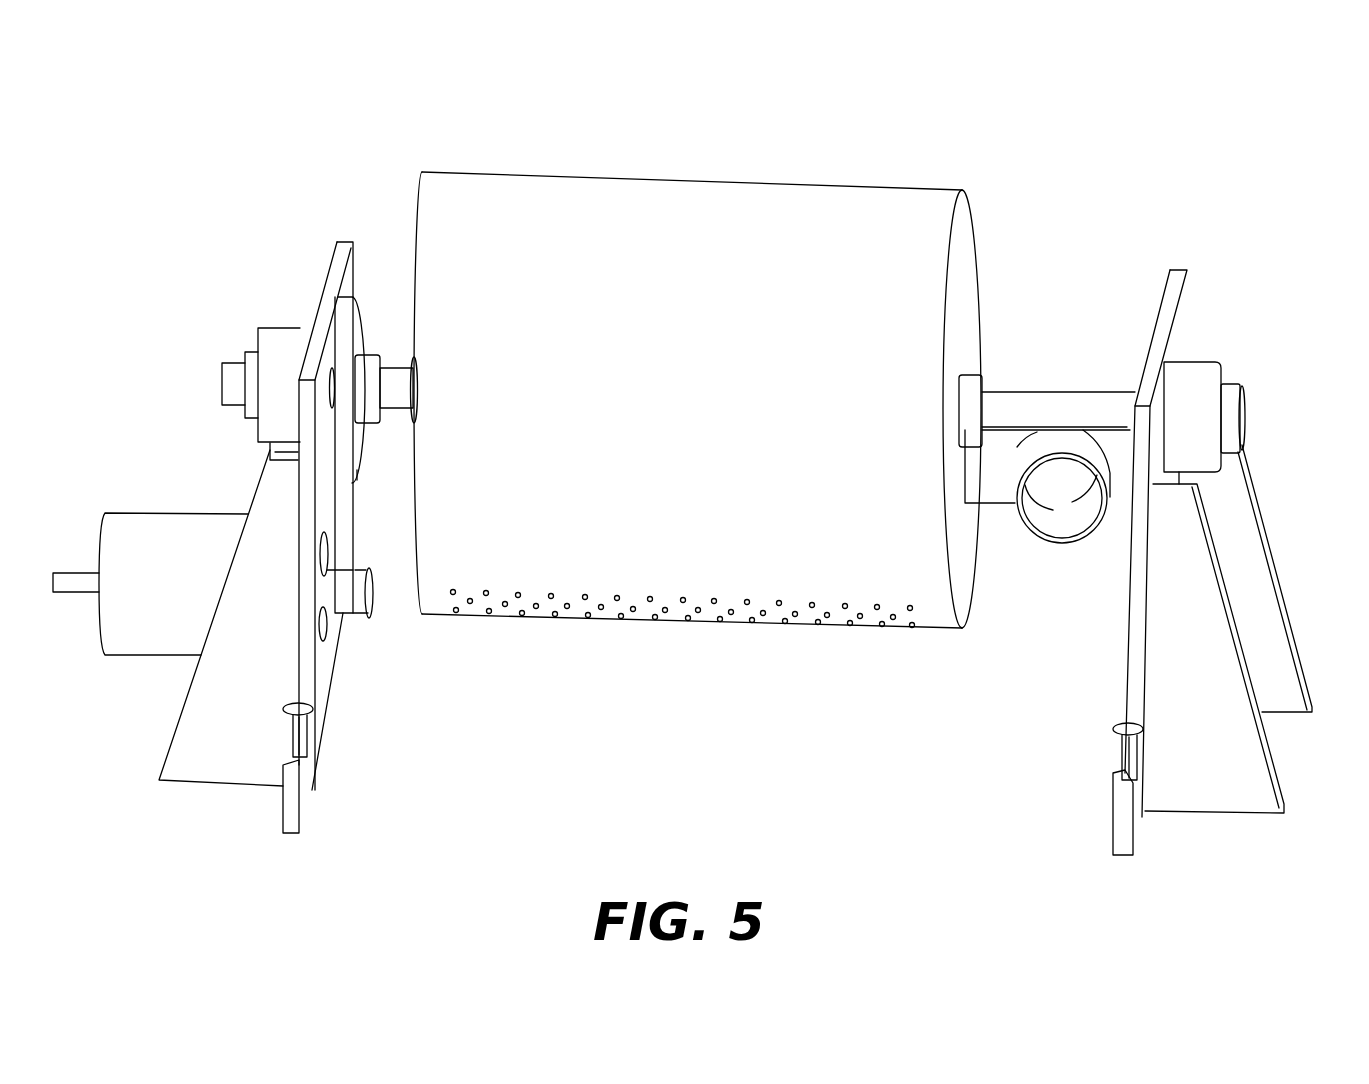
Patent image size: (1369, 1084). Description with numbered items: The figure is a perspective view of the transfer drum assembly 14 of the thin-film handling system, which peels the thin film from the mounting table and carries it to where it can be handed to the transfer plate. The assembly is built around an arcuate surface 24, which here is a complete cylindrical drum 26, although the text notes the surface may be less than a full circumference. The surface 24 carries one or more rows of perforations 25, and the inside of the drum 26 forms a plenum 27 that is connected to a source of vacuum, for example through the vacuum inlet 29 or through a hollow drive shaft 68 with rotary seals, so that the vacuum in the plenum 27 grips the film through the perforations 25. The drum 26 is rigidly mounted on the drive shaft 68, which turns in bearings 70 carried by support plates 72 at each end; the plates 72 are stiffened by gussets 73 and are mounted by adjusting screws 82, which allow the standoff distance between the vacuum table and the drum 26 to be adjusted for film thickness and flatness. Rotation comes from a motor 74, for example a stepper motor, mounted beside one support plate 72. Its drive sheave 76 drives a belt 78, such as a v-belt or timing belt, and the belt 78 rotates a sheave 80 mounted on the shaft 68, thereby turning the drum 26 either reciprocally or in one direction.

The transfer drum assembly 14 is at (876, 156).
The arcuate surface 24 is at (694, 417).
The perforations 25 is at (522, 616).
The cylindrical drum 26 is at (700, 195).
The plenum 27 is at (960, 302).
The vacuum inlet 29 is at (1062, 528).
The drive shaft 68 is at (395, 392).
The bearings 70 is at (283, 348).
The support plates 72 is at (343, 255).
The gussets 73 is at (192, 738).
The motor 74 is at (158, 537).
The drive sheave 76 is at (362, 594).
The belt 78 is at (343, 528).
The sheave 80 is at (360, 327).
The adjusting screws 82 is at (302, 698).